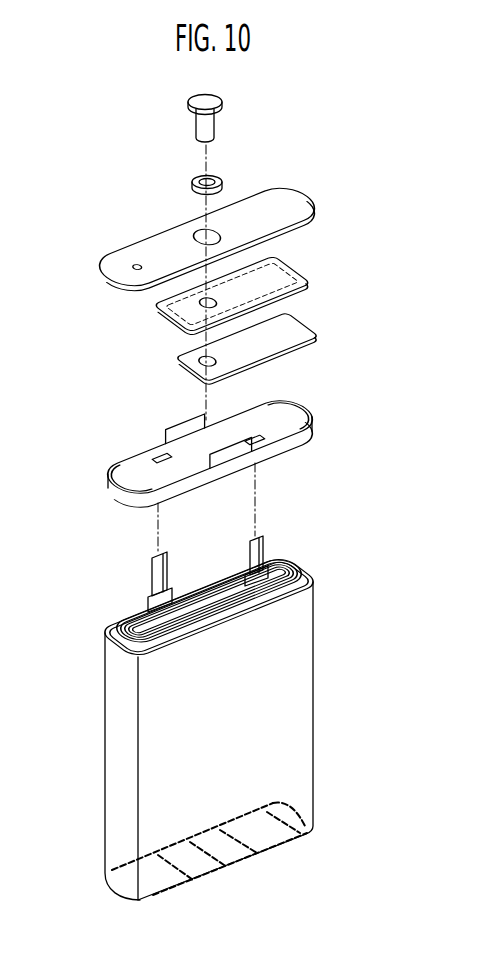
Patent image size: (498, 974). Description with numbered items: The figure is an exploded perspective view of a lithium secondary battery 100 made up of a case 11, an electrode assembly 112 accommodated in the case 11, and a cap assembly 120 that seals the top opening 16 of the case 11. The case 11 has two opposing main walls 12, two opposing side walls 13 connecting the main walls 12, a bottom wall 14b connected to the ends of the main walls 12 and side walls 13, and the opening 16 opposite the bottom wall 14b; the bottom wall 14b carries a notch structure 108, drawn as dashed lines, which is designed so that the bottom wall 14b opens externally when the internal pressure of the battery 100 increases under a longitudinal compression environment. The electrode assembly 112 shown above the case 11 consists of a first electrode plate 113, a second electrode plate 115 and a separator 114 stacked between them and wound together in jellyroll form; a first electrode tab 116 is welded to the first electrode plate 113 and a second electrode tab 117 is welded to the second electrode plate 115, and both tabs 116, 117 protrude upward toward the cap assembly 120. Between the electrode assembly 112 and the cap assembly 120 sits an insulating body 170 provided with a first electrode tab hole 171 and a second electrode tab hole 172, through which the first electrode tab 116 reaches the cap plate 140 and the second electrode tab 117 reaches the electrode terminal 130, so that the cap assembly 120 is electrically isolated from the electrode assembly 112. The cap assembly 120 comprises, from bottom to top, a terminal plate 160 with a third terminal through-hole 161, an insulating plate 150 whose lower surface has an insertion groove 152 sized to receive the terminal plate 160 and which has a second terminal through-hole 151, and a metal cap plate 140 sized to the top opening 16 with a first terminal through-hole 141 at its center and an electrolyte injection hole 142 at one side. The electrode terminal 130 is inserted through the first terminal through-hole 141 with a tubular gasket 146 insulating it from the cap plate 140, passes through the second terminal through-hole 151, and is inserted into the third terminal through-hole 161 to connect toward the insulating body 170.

The lithium secondary battery 100 is at (67, 142).
The cap assembly 120 is at (373, 85).
The electrode terminal 130 is at (216, 103).
The tubular gasket 146 is at (193, 175).
The cap plate 140 is at (287, 202).
The first terminal through-hole 141 is at (207, 236).
The electrolyte injection hole 142 is at (137, 267).
The insulating plate 150 is at (293, 270).
The second terminal through-hole 151 is at (231, 294).
The insertion groove 152 is at (208, 303).
The terminal plate 160 is at (290, 322).
The third terminal through-hole 161 is at (192, 378).
The insulating body 170 is at (110, 488).
The first electrode tab hole 171 is at (162, 458).
The second electrode tab hole 172 is at (255, 440).
The case 11 is at (302, 703).
The main walls 12 is at (305, 777).
The side walls 13 is at (120, 788).
The bottom wall 14b is at (165, 872).
The notch structure 108 is at (250, 837).
The top opening 16 is at (304, 588).
The electrode assembly 112 is at (353, 527).
The first electrode plate 113 is at (208, 601).
The separator 114 is at (209, 601).
The second electrode plate 115 is at (295, 562).
The first electrode tab 116 is at (163, 580).
The second electrode tab 117 is at (257, 552).